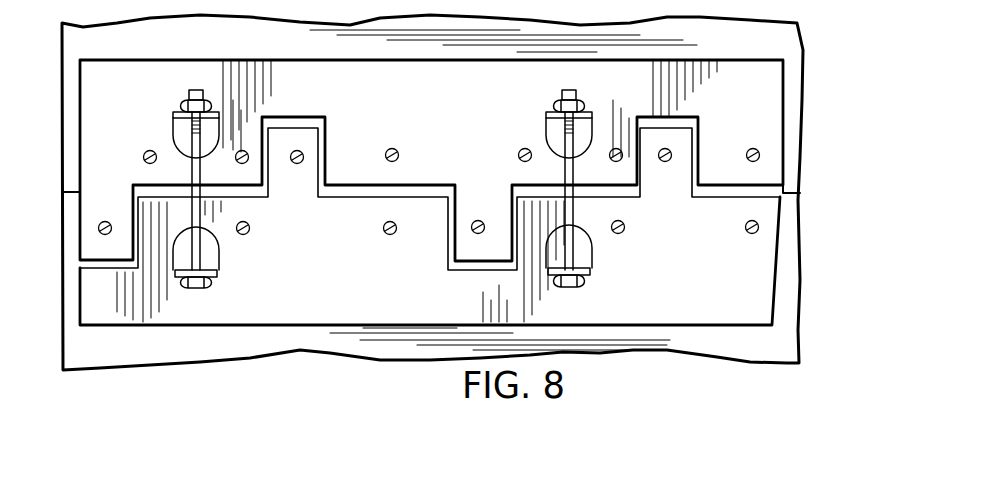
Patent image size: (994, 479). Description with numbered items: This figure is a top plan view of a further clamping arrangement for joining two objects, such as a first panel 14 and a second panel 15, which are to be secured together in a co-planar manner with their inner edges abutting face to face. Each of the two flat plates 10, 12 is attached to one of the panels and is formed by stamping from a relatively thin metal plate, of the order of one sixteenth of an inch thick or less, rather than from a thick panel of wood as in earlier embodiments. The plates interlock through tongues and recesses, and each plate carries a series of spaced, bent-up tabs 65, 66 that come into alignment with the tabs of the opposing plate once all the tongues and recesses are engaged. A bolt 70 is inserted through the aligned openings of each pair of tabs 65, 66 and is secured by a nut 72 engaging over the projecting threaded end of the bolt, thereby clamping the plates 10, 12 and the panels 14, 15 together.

The plate 10 is at (92, 129).
The plate 12 is at (92, 290).
The first panel 14 is at (787, 105).
The second panel 15 is at (790, 291).
The bent-up tab 65 is at (174, 114).
The bent-up tab 66 is at (216, 275).
The bolt 70 is at (199, 248).
The nut 72 is at (183, 102).